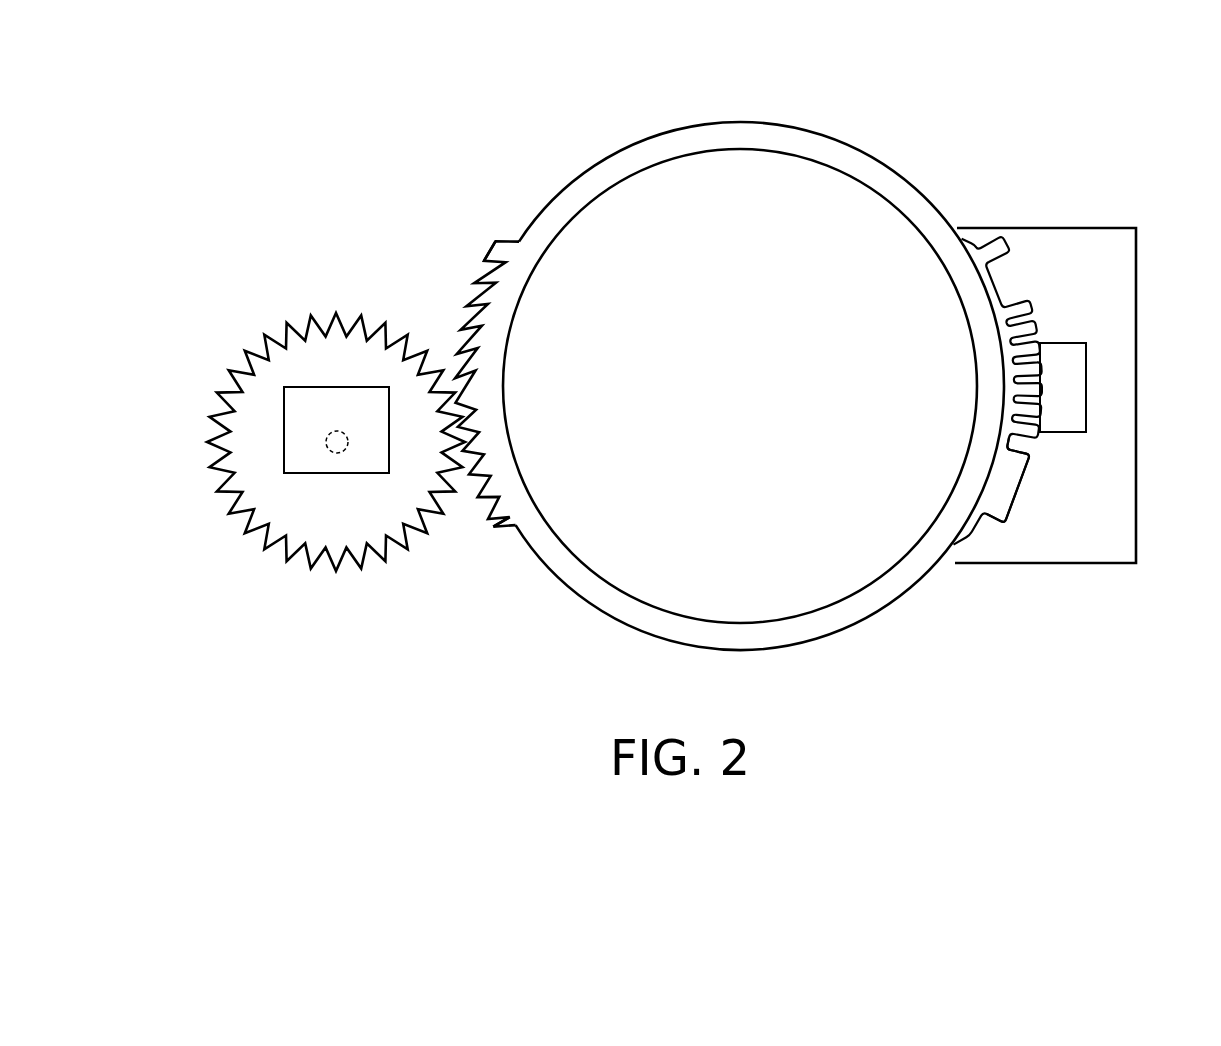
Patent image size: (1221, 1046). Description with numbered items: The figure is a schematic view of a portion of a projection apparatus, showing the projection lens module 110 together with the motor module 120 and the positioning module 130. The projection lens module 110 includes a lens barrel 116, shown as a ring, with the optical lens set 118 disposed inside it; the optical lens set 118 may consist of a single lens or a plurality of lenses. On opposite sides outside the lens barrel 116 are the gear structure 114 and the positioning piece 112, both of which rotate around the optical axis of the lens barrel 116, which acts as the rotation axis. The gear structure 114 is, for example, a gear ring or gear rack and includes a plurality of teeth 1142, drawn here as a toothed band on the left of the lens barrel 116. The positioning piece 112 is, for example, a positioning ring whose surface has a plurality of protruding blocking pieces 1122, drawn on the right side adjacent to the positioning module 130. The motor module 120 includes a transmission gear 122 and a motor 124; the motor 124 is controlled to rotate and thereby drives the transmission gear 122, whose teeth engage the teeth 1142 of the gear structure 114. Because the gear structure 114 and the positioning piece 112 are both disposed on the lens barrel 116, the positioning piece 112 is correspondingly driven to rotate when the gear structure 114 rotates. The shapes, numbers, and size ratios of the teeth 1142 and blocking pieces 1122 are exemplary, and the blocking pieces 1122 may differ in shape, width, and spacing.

The projection lens module 110 is at (914, 126).
The positioning piece 112 is at (1006, 256).
The blocking pieces 1122 is at (1030, 445).
The gear structure 114 is at (478, 290).
The teeth 1142 is at (500, 243).
The lens barrel 116 is at (628, 146).
The optical lens set 118 is at (783, 178).
The motor module 120 is at (210, 328).
The transmission gear 122 is at (323, 321).
The motor 124 is at (284, 437).
The positioning module 130 is at (1136, 286).